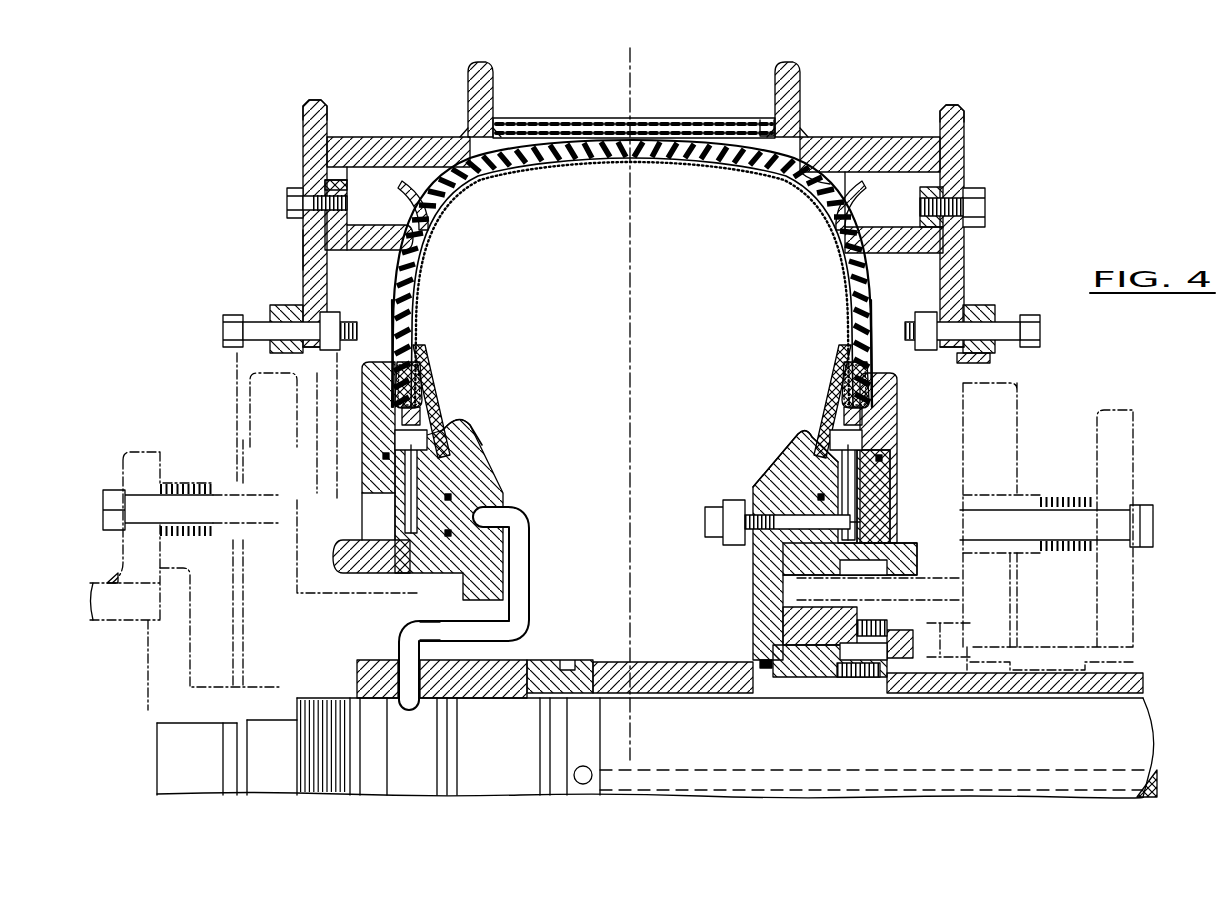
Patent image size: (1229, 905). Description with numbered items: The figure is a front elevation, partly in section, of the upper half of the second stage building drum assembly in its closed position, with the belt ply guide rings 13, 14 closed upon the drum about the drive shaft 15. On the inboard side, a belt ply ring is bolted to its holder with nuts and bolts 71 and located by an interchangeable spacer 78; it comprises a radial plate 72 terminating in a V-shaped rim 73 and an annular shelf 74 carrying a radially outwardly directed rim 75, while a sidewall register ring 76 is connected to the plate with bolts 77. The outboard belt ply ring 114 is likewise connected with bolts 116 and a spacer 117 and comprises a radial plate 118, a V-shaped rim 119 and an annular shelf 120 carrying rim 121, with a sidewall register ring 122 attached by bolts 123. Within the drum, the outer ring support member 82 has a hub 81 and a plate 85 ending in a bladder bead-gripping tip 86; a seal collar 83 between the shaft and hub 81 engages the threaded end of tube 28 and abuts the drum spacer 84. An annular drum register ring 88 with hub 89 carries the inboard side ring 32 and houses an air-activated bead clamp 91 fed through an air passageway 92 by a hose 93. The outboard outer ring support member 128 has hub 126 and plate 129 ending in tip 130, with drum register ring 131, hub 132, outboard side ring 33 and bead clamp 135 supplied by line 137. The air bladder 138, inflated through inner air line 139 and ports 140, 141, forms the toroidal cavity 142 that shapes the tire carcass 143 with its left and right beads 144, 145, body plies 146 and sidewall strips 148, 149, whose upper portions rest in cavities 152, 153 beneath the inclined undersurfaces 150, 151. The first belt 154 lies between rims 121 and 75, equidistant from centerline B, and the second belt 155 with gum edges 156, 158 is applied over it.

The inboard belt ply guide ring 13 is at (1005, 137).
The outboard belt ply guide ring 14 is at (230, 107).
The drive shaft 15 is at (178, 758).
The tube 28 is at (937, 694).
The inboard side ring 32 is at (892, 415).
The outboard side ring 33 is at (375, 400).
The bolt 71 is at (1032, 338).
The radial plate 72 is at (960, 246).
The V-shaped rim 73 is at (955, 112).
The annular shelf 74 is at (892, 140).
The radially outwardly directed rim 75 is at (792, 98).
The sidewall register ring 76 is at (872, 250).
The bolts 77 is at (986, 207).
The spacer 78 is at (977, 318).
The hub 81 is at (847, 662).
The outer ring support member 82 is at (742, 577).
The seal collar 83 is at (764, 670).
The drum spacer 84 is at (665, 664).
The plate 85 is at (770, 595).
The bladder bead-gripping tip 86 is at (800, 437).
The annular drum register ring 88 is at (862, 492).
The hub 89 is at (905, 562).
The air-activated bead clamp 91 is at (840, 420).
The air passageway 92 is at (850, 482).
The hose 93 is at (714, 508).
The belt ply ring 114 is at (300, 152).
The bolt 116 is at (235, 331).
The interchangeable spacer 117 is at (292, 302).
The radial plate 118 is at (303, 248).
The V-shaped rim 119 is at (312, 100).
The annular shelf 120 is at (428, 150).
The radially outwardly directed rim 121 is at (470, 105).
The sidewall register ring 122 is at (392, 236).
The bolts 123 is at (290, 203).
The hub 126 is at (505, 665).
The outer ring support member 128 is at (512, 469).
The plate 129 is at (440, 622).
The bladder bead-gripping tip 130 is at (466, 428).
The annular drum register ring 131 is at (395, 458).
The hub 132 is at (352, 562).
The air-activated bead clamp 135 is at (420, 415).
The supply line 137 is at (521, 556).
The air bladder 138 is at (444, 254).
The inner air line 139 is at (848, 768).
The port 140 is at (592, 768).
The port 141 is at (580, 665).
The toroidal-shaped cavity 142 is at (695, 342).
The tire carcass 143 is at (841, 199).
The left bead 144 is at (418, 385).
The right bead 145 is at (840, 400).
The body plies 146 is at (718, 166).
The left sidewall strip 148 is at (405, 282).
The right sidewall strip 149 is at (862, 340).
The inclined undersurface 150 is at (470, 162).
The inclined undersurface 151 is at (818, 178).
The cavity 152 is at (335, 181).
The cavity 153 is at (903, 184).
The first belt 154 is at (590, 120).
The second belt 155 is at (666, 126).
The ribbon of elastomeric material 156 is at (505, 122).
The ribbon of elastomeric material 158 is at (770, 126).
The centerline B is at (636, 70).